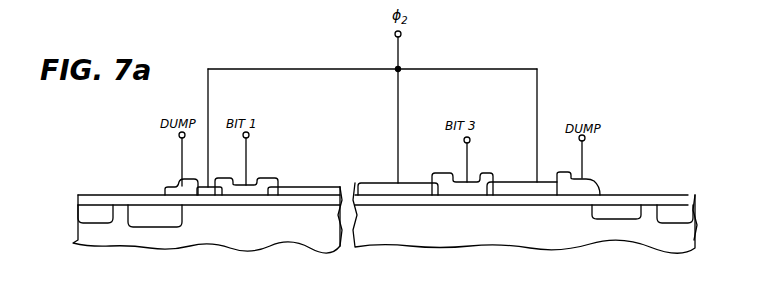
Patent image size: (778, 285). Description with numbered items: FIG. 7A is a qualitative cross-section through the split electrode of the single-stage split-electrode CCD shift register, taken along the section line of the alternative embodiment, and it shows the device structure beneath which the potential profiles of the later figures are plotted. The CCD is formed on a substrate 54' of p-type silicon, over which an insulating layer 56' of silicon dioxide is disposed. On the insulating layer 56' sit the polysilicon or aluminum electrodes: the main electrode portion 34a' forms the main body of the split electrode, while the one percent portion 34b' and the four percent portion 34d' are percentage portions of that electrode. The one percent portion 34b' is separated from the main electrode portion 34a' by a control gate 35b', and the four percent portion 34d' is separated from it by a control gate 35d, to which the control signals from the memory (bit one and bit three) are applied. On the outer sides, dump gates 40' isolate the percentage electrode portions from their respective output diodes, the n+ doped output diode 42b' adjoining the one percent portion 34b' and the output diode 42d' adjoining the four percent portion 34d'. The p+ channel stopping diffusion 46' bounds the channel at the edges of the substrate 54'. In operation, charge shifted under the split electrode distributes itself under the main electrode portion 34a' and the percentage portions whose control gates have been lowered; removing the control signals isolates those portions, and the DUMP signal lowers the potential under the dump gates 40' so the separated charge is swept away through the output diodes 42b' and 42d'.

The main electrode portion 34a' is at (305, 178).
The 1% electrode portion 34b' is at (207, 213).
The polysilicon bit line electrode 35b' is at (256, 171).
The control gate 35d is at (484, 181).
The 4% electrode portion 34d' is at (526, 170).
The dump gate 40' is at (386, 170).
The output diode 42b' is at (118, 196).
The output diode 42d' is at (638, 194).
The channel stopping diffusion 46' is at (382, 219).
The substrate 54' is at (525, 226).
The insulating layer 56' is at (383, 177).